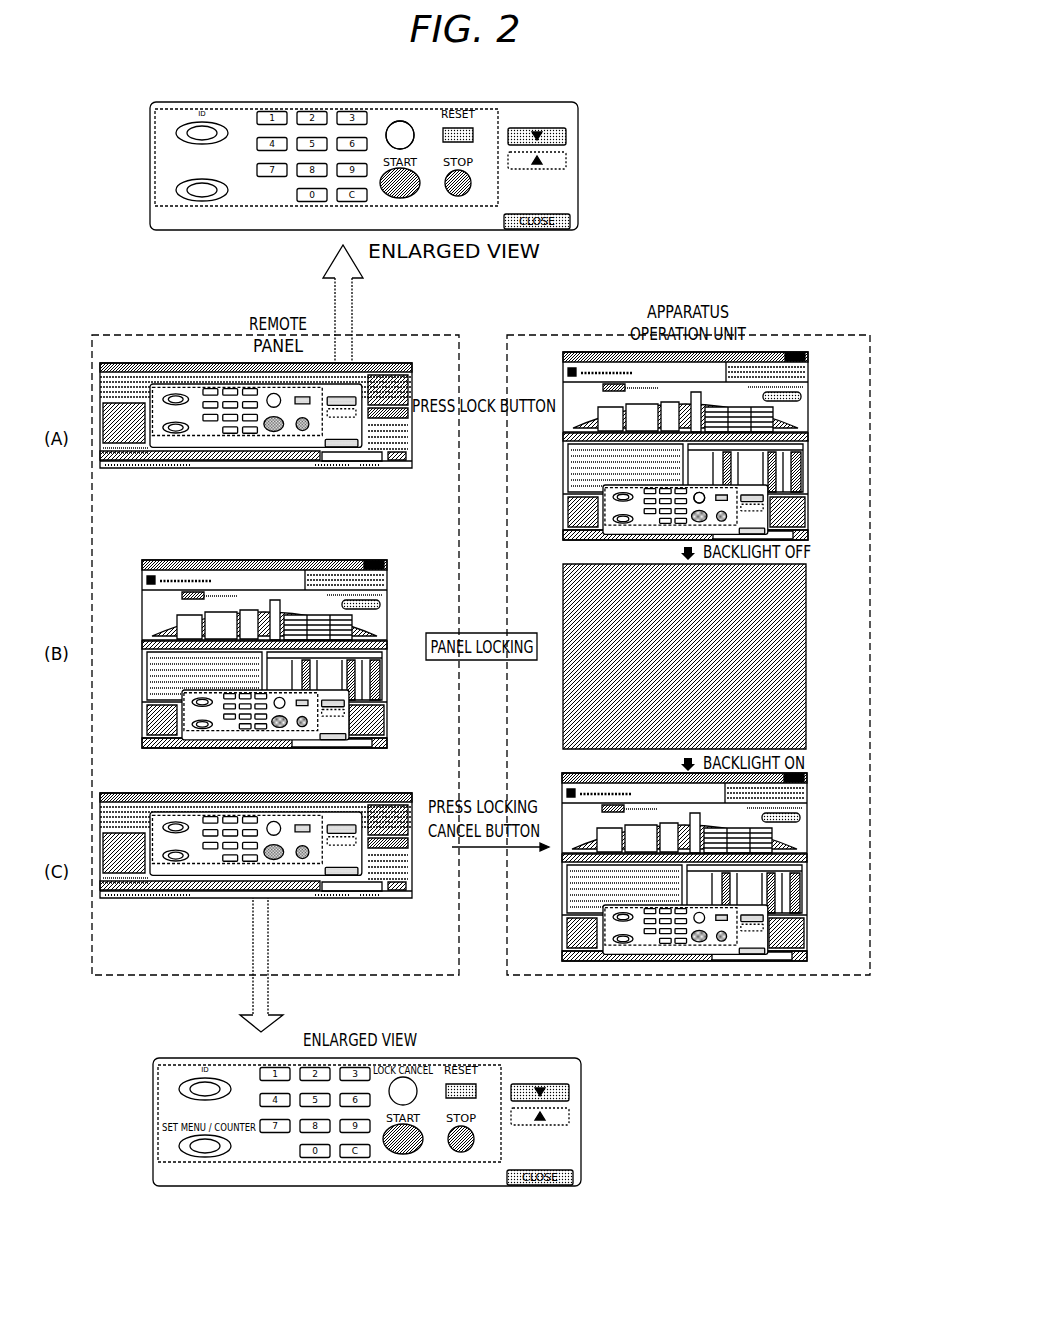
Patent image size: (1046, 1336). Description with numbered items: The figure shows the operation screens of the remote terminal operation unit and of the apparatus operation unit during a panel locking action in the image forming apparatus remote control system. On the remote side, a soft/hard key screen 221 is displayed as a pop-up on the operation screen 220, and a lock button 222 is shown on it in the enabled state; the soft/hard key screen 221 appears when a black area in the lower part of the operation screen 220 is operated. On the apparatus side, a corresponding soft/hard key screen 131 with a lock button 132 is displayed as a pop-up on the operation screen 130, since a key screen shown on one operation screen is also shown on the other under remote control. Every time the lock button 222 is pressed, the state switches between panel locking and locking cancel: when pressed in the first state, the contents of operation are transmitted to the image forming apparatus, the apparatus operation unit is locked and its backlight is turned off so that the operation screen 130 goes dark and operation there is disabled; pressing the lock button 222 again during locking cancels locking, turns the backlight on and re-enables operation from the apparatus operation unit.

The operation screen 130 is at (716, 685).
The soft/hard key screen 131 is at (736, 749).
The lock button 132 is at (704, 500).
The operation screen 220 is at (365, 600).
The soft/hard key screen 221 is at (514, 102).
The lock button 222 is at (414, 141).